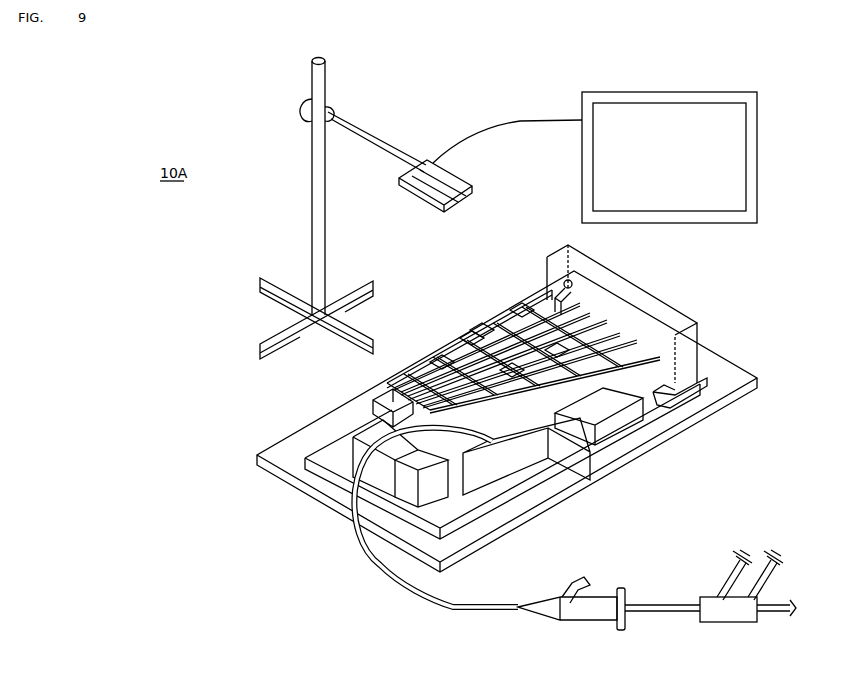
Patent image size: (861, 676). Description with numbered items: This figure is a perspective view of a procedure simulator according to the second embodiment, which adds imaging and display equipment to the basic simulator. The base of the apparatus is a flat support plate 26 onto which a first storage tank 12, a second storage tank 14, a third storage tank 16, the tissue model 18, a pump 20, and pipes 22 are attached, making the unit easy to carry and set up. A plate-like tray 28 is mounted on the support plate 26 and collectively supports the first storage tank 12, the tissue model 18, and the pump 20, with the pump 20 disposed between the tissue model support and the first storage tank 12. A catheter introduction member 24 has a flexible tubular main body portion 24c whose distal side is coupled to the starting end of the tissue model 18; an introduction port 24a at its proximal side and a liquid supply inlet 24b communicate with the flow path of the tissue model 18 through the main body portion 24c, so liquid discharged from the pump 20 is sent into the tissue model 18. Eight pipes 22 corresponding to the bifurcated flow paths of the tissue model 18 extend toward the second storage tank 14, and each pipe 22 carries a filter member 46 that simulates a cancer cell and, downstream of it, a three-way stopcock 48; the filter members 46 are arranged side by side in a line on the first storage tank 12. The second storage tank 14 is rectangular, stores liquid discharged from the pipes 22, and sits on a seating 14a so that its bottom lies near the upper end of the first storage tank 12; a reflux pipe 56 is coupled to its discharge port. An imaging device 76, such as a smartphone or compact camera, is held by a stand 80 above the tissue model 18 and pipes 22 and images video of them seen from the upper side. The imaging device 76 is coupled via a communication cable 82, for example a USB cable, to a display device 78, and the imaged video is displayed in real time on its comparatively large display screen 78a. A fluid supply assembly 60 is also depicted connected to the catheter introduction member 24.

The first storage tank 12 is at (510, 458).
The second storage tank 14 is at (650, 342).
The seating 14a is at (687, 388).
The third storage tank 16 is at (628, 422).
The tissue model 18 is at (400, 400).
The pump 20 is at (435, 483).
The pipes 22 is at (488, 317).
The catheter introduction member 24 is at (575, 538).
The introduction port 24a is at (598, 597).
The liquid supply inlet 24b is at (578, 578).
The main body portion 24c is at (497, 600).
The support plate 26 is at (600, 462).
The tray 28 is at (490, 520).
The filter member 46 is at (450, 376).
The three-way stopcock 48 is at (460, 333).
The reflux pipe 56 is at (543, 315).
The fluid supply unit 60 is at (657, 603).
The imaging device 76 is at (453, 181).
The display device 78 is at (697, 157).
The display screen 78a is at (732, 170).
The stand 80 is at (327, 84).
The communication cable 82 is at (508, 120).